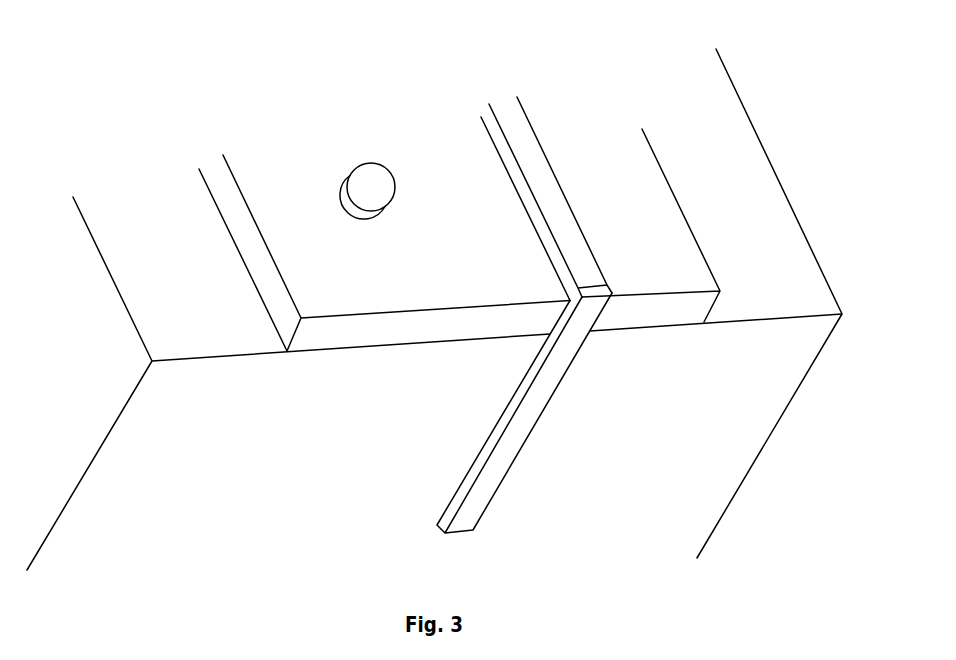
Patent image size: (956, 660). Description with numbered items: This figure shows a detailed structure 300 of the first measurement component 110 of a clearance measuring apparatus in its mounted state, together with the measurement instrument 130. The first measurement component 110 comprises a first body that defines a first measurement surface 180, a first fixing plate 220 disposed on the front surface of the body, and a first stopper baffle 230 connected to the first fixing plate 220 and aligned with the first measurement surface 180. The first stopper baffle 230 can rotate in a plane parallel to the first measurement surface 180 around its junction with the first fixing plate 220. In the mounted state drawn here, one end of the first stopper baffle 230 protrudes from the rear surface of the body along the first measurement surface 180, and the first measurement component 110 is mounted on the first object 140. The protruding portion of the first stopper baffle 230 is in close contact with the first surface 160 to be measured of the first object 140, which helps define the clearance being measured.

The detailed structure 300 is at (84, 42).
The first object 140 is at (170, 344).
The first measurement component 110 is at (313, 310).
The measurement instrument 130 is at (387, 196).
The first fixing plate 220 is at (585, 257).
The first stopper baffle 230 is at (513, 447).
The first measurement surface 180 is at (695, 307).
The first surface to be measured 160 is at (748, 400).